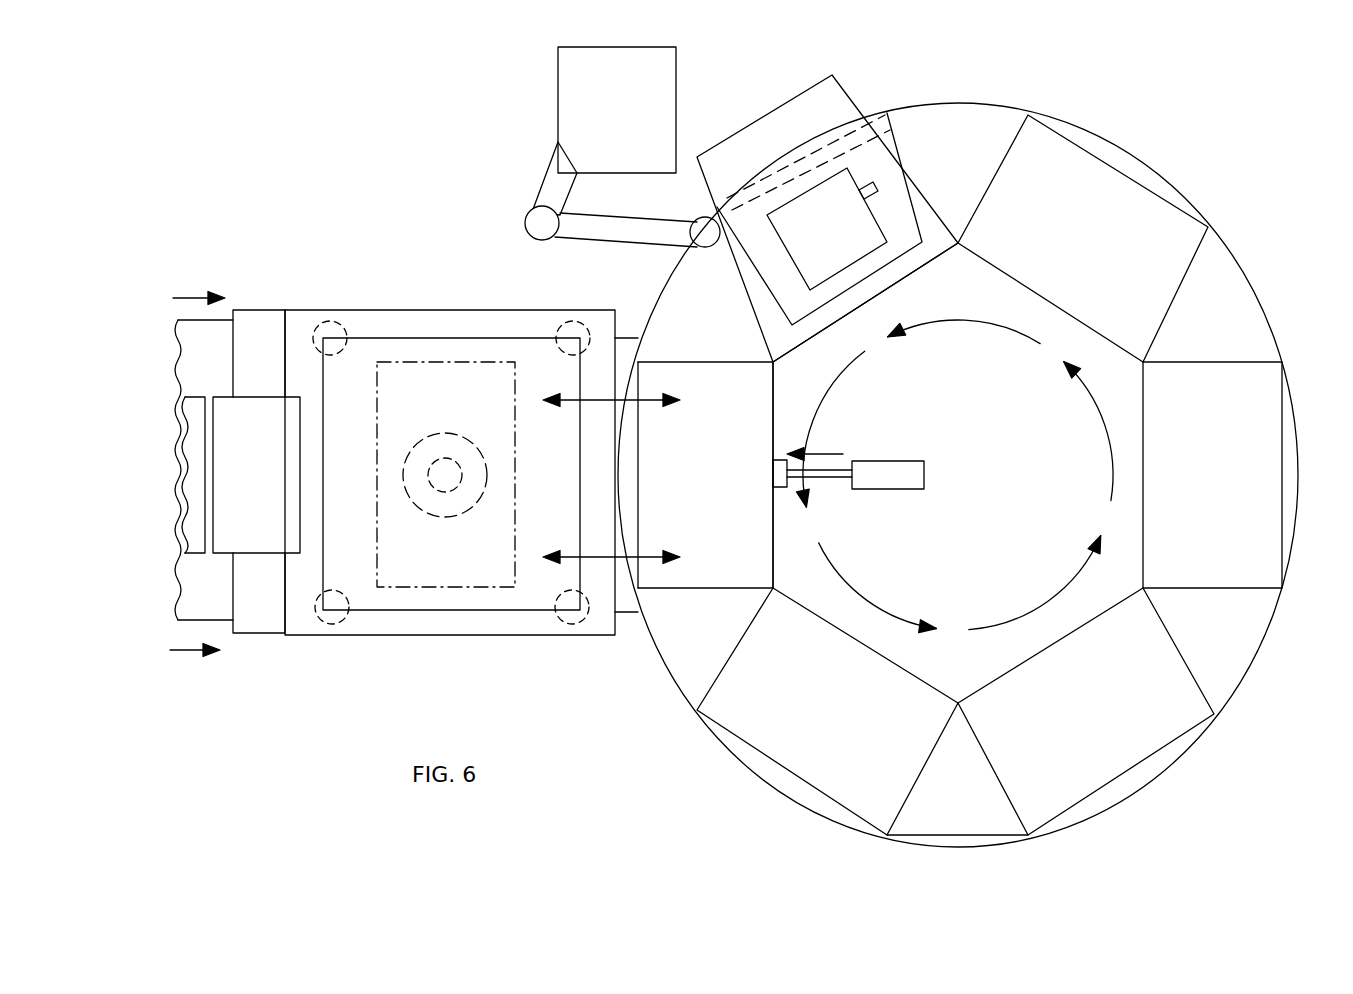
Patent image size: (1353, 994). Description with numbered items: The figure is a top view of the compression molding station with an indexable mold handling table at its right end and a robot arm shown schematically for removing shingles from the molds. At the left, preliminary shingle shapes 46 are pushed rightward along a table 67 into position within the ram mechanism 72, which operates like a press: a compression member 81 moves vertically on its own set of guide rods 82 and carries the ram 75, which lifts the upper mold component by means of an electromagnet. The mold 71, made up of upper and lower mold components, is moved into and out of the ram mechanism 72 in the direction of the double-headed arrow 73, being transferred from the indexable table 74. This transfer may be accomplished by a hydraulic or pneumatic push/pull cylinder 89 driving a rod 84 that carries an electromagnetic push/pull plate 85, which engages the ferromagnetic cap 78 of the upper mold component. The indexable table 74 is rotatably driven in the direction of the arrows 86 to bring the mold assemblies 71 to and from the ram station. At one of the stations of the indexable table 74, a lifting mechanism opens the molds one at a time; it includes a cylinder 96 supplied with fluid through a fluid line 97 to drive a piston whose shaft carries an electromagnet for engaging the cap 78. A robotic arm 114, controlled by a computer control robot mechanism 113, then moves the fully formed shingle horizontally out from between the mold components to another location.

The preliminary shingle shape 46 is at (255, 407).
The table 67 is at (255, 625).
The mold 71 is at (910, 117).
The ram mechanism 72 is at (437, 321).
The double-headed arrow 73 is at (650, 397).
The indexable table 74 is at (760, 778).
The ram 75 is at (445, 492).
The ferromagnetic cap 78 is at (777, 387).
The compression member 81 is at (512, 310).
The guide rods 82 is at (580, 322).
The rod 84 is at (828, 480).
The electromagnetic push/pull plate 85 is at (783, 453).
The arrows 86 is at (888, 615).
The push/pull cylinder 89 is at (903, 460).
The cylinder 96 is at (886, 228).
The fluid line 97 is at (876, 187).
The controller 113 is at (558, 82).
The robotic arm 114 is at (542, 185).